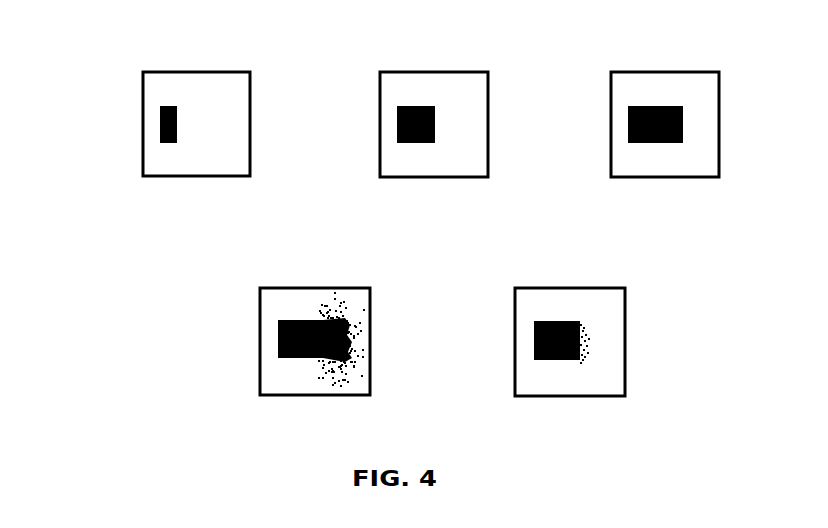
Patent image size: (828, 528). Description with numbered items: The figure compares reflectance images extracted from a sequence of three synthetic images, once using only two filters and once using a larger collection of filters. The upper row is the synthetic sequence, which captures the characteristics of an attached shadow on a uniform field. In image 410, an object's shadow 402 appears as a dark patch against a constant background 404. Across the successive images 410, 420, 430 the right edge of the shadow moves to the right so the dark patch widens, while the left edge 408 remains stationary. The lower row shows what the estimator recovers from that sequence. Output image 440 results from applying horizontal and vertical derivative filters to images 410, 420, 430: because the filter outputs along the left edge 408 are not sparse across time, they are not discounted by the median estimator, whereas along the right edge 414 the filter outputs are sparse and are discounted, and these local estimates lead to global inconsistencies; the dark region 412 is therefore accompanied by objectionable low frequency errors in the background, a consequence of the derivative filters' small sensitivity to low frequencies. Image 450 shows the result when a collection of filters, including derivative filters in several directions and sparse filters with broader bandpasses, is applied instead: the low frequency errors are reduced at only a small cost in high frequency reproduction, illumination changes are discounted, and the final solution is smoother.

The object's shadow 402 is at (143, 107).
The constant background 404 is at (168, 168).
The left edge 408 is at (160, 133).
The image 410 is at (185, 122).
The object image 412 is at (278, 340).
The right edge 414 is at (345, 326).
The image 420 is at (400, 109).
The image 430 is at (630, 109).
The output image 440 is at (316, 326).
The image 450 is at (550, 287).